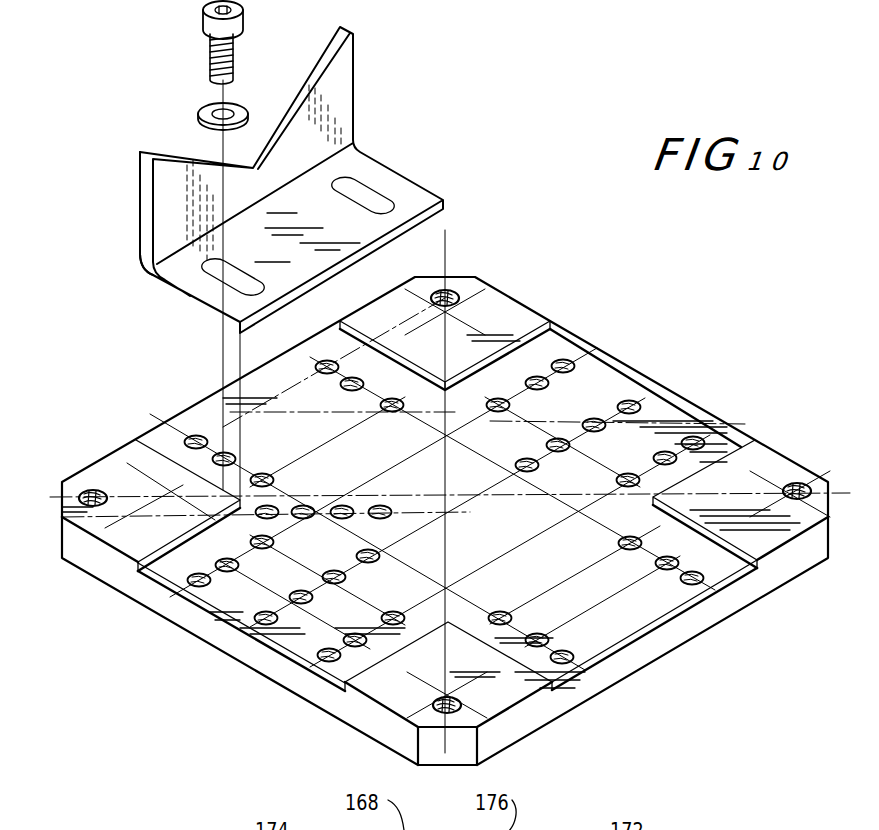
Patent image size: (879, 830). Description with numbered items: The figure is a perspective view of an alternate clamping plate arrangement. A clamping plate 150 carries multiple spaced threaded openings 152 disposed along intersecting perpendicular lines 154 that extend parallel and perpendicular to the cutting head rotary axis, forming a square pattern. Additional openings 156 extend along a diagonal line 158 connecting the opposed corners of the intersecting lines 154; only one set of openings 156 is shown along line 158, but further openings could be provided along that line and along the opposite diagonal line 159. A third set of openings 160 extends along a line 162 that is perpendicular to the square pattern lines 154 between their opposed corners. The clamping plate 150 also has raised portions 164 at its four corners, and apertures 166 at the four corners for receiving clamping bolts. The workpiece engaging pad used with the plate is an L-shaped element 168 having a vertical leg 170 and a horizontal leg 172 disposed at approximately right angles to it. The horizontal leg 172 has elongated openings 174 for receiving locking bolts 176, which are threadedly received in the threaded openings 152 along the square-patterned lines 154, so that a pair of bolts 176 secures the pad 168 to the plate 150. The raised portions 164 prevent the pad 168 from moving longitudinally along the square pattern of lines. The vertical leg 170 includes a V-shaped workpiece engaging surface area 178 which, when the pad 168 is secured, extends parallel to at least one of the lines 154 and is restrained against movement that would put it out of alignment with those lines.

The clamping plate 150 is at (173, 607).
The threaded openings 152 is at (335, 690).
The intersecting perpendicular lines 154 is at (558, 340).
The additional openings 156 is at (345, 506).
The diagonal line 158 is at (572, 497).
The opposite diagonal line 159 is at (448, 598).
The third set of openings 160 is at (630, 404).
The line 162 is at (484, 488).
The raised portions 164 is at (505, 310).
The apertures 166 is at (86, 492).
The L-shaped element 168 is at (272, 263).
The vertical leg 170 is at (165, 197).
The horizontal leg 172 is at (205, 287).
The elongated openings 174 is at (383, 200).
The locking bolts 176 is at (210, 52).
The V-shaped workpiece engaging surface area 178 is at (172, 152).